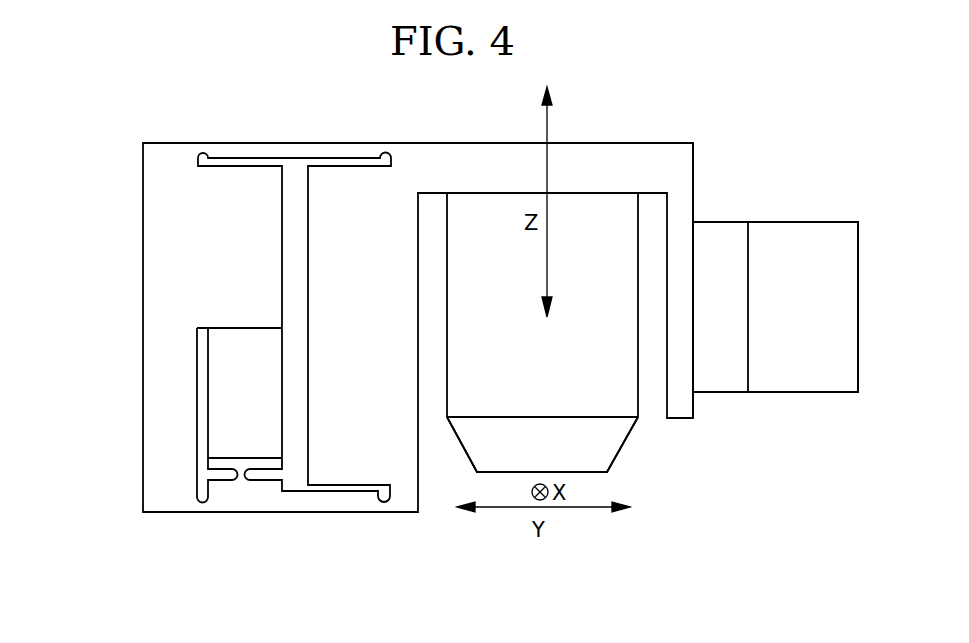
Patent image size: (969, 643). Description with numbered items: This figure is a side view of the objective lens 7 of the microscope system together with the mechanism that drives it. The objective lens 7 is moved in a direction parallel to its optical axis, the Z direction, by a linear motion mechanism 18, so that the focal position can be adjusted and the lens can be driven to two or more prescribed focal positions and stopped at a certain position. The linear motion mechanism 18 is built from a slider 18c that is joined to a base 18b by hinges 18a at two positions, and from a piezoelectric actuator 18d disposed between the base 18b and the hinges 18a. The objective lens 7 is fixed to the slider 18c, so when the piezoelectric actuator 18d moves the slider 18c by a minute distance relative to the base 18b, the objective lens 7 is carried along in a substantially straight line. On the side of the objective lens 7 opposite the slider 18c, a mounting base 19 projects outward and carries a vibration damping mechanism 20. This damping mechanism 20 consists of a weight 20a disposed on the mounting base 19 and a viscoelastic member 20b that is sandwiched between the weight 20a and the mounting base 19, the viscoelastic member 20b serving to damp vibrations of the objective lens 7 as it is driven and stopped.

The objective lens 7 is at (622, 443).
The linear motion mechanism 18 is at (417, 348).
The hinges 18a is at (302, 152).
The base 18b is at (170, 214).
The slider 18c is at (418, 457).
The piezoelectric actuator 18d is at (220, 405).
The mounting base 19 is at (693, 188).
The vibration damping mechanism 20 is at (775, 366).
The weight 20a is at (803, 341).
The viscoelastic member 20b is at (730, 392).